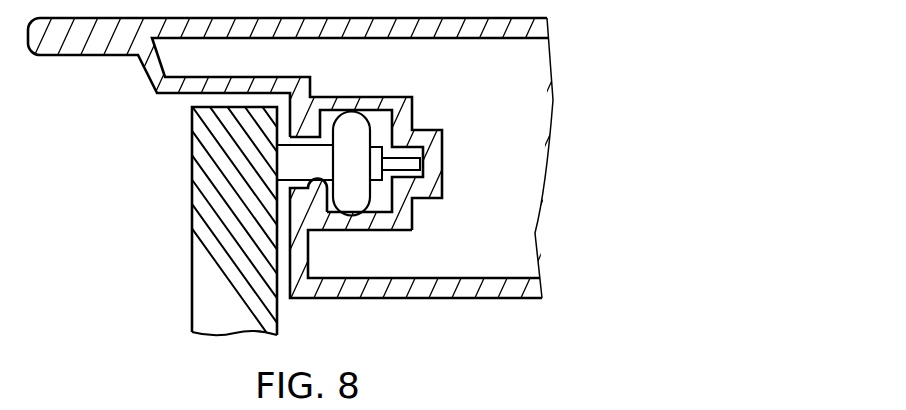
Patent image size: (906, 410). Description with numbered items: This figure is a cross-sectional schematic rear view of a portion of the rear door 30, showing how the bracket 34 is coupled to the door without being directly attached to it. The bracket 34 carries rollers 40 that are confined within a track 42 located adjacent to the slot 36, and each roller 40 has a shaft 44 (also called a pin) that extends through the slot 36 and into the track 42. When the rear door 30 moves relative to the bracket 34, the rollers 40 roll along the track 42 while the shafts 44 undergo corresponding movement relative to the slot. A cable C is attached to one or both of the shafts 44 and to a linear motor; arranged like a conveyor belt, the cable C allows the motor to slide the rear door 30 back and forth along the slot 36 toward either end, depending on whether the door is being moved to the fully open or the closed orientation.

The rear door 30 is at (517, 68).
The bracket 34 is at (192, 230).
The slot 36 is at (330, 212).
The roller 40 is at (352, 135).
The track 42 is at (378, 212).
The shaft 44 is at (306, 165).
The cable C is at (420, 162).